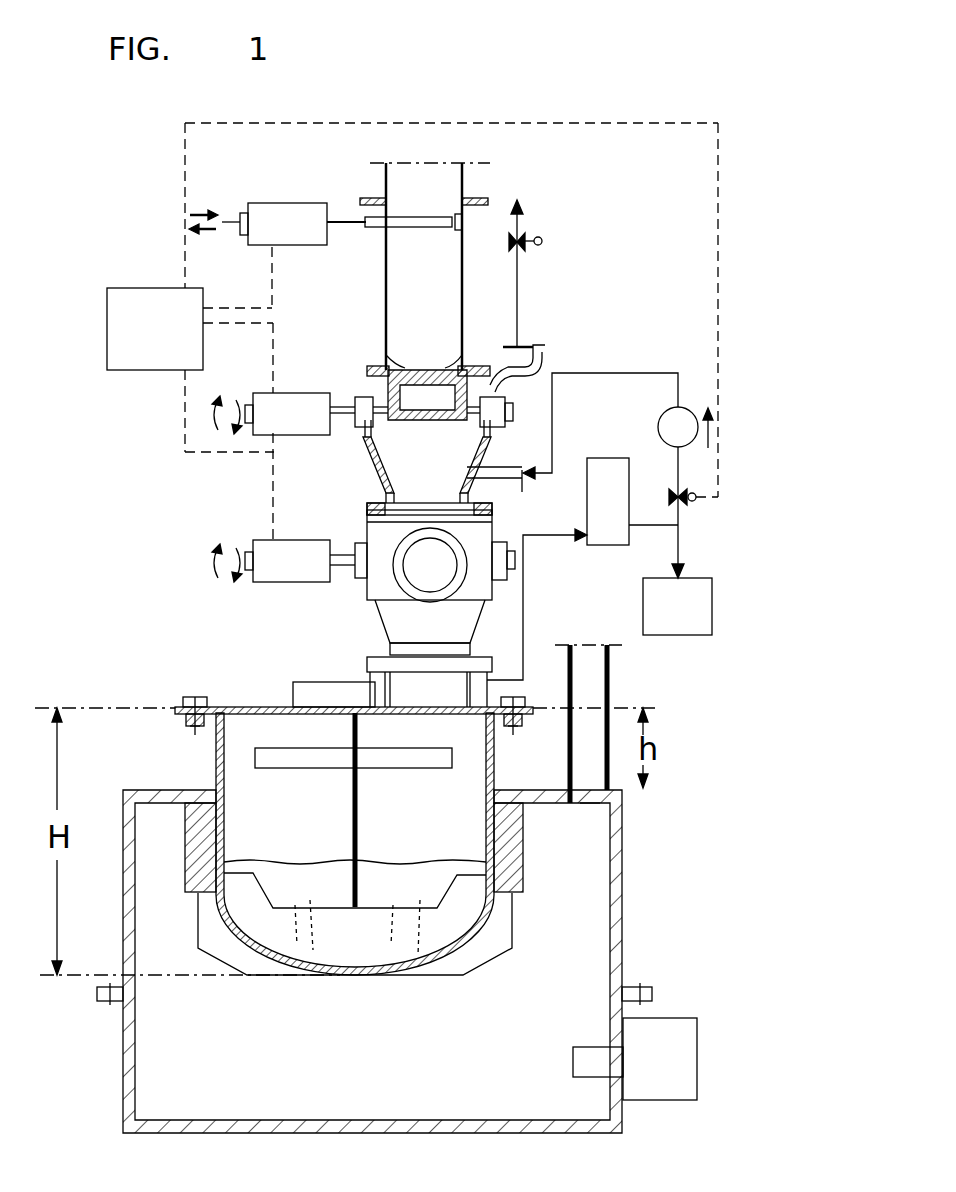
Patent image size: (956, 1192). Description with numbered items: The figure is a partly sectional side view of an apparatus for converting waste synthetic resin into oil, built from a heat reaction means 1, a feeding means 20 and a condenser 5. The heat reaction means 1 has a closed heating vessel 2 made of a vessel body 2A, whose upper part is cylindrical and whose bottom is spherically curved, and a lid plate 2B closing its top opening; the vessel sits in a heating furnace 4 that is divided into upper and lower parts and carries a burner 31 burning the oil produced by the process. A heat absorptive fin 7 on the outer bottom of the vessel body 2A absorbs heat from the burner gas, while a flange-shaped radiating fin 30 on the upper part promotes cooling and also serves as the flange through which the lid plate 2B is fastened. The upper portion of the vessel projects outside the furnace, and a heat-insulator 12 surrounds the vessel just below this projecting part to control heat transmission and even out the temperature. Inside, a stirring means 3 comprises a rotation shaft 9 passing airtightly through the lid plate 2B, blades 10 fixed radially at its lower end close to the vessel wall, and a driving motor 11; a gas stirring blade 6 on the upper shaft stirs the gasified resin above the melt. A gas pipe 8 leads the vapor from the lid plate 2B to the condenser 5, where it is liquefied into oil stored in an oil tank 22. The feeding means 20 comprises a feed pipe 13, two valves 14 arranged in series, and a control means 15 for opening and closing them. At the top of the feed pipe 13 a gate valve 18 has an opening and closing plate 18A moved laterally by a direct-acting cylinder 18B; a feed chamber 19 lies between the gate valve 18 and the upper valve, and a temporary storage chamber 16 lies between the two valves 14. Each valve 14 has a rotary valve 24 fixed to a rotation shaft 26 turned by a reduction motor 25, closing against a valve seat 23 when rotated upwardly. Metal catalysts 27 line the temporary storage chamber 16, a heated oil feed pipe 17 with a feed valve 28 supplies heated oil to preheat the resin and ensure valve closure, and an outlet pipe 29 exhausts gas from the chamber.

The heat reaction means 1 is at (642, 876).
The heating vessel 2 is at (357, 874).
The vessel body 2A is at (330, 975).
The lid plate 2B is at (222, 705).
The stirring means 3 is at (405, 860).
The heating furnace 4 is at (135, 1092).
The condenser 5 is at (607, 547).
The gas stirring blade 6 is at (272, 768).
The heat absorptive fin 7 is at (250, 975).
The gas pipe 8 is at (527, 632).
The rotation shaft 9 is at (350, 836).
The blades 10 is at (372, 950).
The driving motor 11 is at (293, 693).
The heat-insulator 12 is at (523, 885).
The feed pipe 13 is at (386, 278).
The valves 14 is at (402, 508).
The control means 15 is at (130, 372).
The temporary storage chamber 16 is at (440, 488).
The heated oil feed pipe 17 is at (500, 466).
The gate valve 18 is at (354, 238).
The opening and closing plate 18A is at (415, 216).
The direct-acting cylinder 18B is at (297, 187).
The feed chamber 19 is at (438, 325).
The feeding means 20 is at (243, 472).
The oil tank 22 is at (666, 636).
The valve seat 23 is at (458, 364).
The rotary valve 24 is at (392, 364).
The reduction motor 25 is at (262, 393).
The rotation shaft 26 is at (364, 402).
The metal catalysts 27 is at (368, 480).
The feed valve 28 is at (684, 505).
The outlet pipe 29 is at (545, 348).
The radiating fin 30 is at (185, 728).
The burner 31 is at (665, 1100).